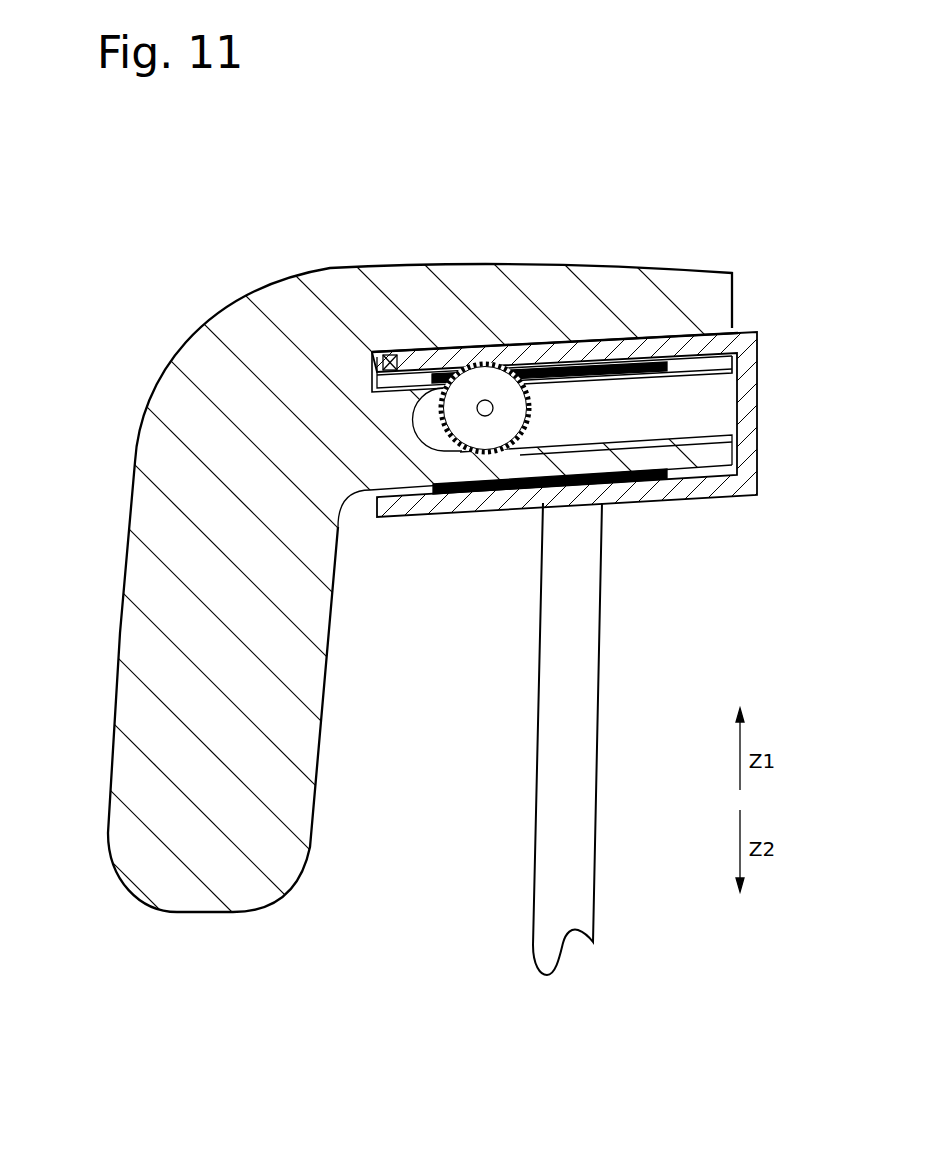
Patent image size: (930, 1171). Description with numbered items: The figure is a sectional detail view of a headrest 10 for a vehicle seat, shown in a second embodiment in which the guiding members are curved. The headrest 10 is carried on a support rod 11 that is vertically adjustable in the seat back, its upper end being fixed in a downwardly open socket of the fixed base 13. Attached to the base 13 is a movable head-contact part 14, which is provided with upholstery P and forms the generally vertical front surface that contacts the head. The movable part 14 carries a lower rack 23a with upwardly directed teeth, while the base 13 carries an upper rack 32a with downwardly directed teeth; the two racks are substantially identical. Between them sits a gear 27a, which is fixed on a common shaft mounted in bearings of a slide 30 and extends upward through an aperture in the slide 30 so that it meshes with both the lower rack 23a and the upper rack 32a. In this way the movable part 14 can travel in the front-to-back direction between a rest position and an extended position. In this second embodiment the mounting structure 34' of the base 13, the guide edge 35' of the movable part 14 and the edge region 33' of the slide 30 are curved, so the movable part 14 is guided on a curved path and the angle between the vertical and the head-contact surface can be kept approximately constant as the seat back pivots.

The headrest 10 is at (601, 147).
The support rod 11 is at (553, 815).
The fixed base 13 is at (758, 345).
The movable head-contact part 14 is at (294, 720).
The lower rack 23a is at (673, 452).
The gear 27a is at (472, 395).
The slide 30 is at (448, 492).
The upper rack 32a is at (385, 355).
The edge region of the slide 33' is at (550, 556).
The mounting structure of the base 34' is at (557, 557).
The guide edge of the movable part 35' is at (596, 508).
The upholstery P is at (167, 540).